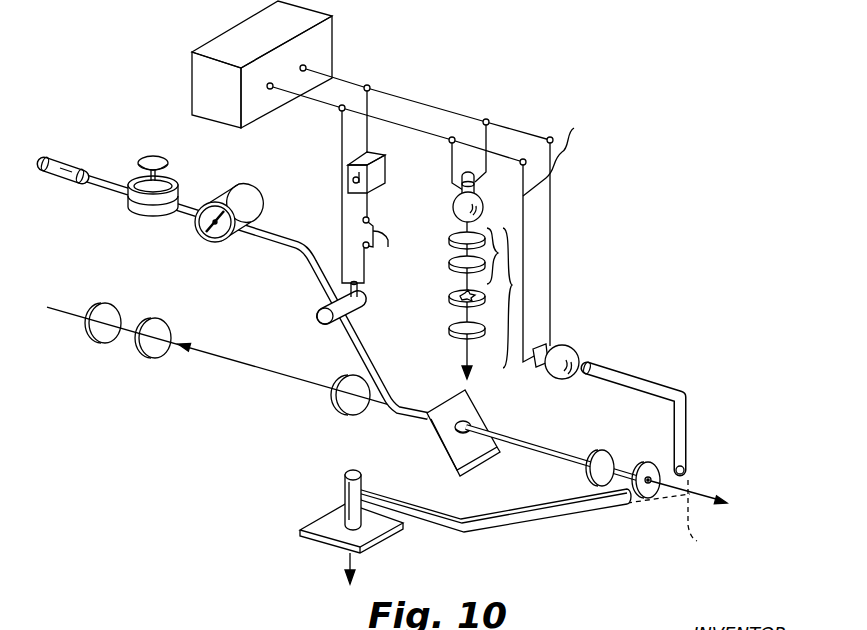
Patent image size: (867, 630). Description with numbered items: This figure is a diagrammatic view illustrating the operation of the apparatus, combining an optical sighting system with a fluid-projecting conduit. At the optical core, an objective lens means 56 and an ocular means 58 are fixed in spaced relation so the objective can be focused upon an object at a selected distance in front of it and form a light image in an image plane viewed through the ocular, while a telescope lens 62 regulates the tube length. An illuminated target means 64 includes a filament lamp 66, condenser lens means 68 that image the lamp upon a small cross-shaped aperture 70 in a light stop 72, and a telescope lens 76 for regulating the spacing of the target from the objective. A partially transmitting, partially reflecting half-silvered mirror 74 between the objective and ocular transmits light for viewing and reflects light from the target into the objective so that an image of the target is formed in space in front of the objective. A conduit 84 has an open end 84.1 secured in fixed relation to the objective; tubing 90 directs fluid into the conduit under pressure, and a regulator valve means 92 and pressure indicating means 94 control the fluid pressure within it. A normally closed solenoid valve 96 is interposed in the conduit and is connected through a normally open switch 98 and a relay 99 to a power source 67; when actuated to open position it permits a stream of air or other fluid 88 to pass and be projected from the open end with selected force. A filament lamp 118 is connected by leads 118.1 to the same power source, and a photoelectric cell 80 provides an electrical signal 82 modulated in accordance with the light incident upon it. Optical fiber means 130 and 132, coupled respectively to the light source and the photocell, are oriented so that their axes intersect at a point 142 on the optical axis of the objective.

The power source 67 is at (308, 53).
The tubing 90 is at (72, 163).
The regulator valve means 92 is at (130, 202).
The pressure indicating means 94 is at (250, 203).
The relay 99 is at (370, 193).
The normally open switch 98 is at (383, 243).
The filament lamp 66 is at (453, 201).
The leads 118.1 is at (573, 160).
The condenser lens means 68 is at (498, 253).
The illuminated target means 64 is at (512, 285).
The cross-shaped aperture 70 is at (455, 292).
The light stop 72 is at (450, 303).
The telescope lens 76 is at (452, 337).
The ocular means 58 is at (88, 292).
The solenoid valve 96 is at (322, 310).
The telescope lens 62 is at (340, 404).
The filament lamp 118 is at (577, 353).
The optical fiber means 130 is at (664, 390).
The conduit 84 is at (530, 442).
The half-silvered mirror 74 is at (478, 460).
The objective lens means 56 is at (592, 447).
The stream of air or other fluid 88 is at (693, 494).
The photoelectric cell 80 is at (343, 480).
The electrical signal 82 is at (347, 556).
The optical fiber means 132 is at (557, 519).
The open end 84.1 is at (650, 484).
The point 142 is at (680, 519).